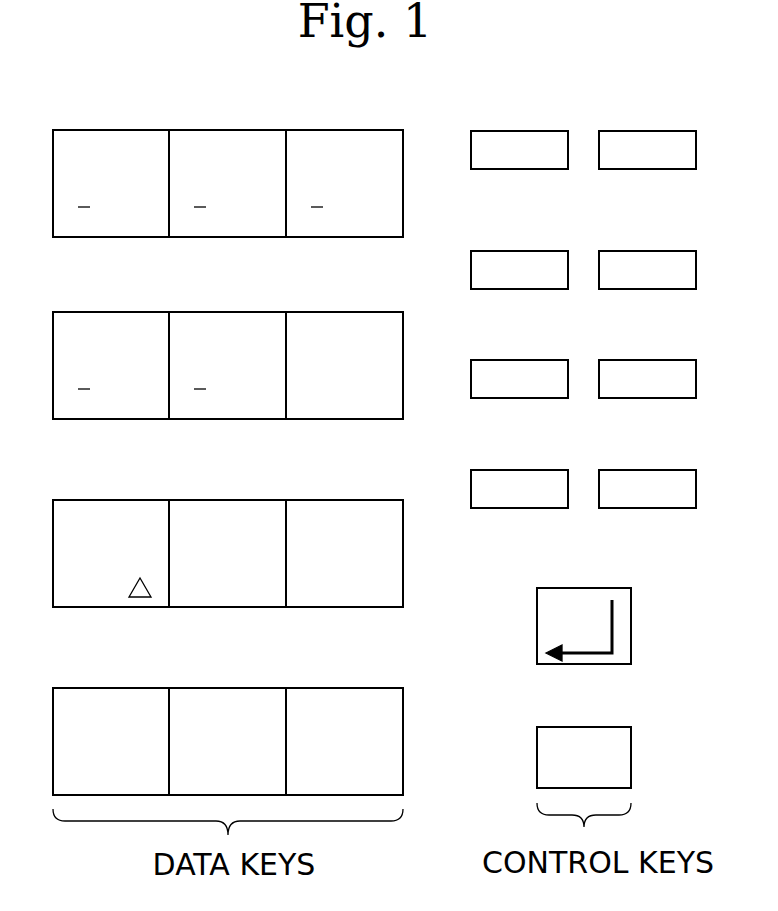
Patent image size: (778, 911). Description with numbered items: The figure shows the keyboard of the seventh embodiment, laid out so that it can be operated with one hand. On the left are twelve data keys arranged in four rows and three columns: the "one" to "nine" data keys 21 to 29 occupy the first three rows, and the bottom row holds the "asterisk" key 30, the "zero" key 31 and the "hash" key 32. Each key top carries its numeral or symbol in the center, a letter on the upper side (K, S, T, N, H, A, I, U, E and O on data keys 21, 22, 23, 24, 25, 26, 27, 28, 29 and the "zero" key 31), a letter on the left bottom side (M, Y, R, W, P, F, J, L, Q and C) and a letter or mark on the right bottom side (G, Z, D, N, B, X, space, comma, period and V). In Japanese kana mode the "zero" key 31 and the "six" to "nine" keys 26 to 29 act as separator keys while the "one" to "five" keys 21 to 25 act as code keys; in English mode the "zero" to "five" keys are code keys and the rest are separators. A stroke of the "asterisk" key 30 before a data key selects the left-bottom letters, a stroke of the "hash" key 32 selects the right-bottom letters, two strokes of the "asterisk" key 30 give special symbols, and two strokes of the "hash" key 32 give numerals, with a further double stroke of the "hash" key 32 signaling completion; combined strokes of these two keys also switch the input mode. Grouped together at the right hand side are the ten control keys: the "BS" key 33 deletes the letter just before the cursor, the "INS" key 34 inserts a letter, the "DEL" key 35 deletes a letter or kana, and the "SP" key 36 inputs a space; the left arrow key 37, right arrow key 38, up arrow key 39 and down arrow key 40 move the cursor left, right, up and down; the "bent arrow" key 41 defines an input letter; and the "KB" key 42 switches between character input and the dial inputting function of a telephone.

The data key 21 is at (83, 129).
The data key 22 is at (199, 129).
The data key 23 is at (316, 129).
The data key 24 is at (83, 311).
The data key 25 is at (199, 311).
The data key 26 is at (316, 311).
The data key 27 is at (83, 499).
The data key 28 is at (199, 499).
The data key 29 is at (316, 499).
The "*" key 30 is at (83, 687).
The "0" key 31 is at (199, 687).
The "#" key 32 is at (316, 687).
The "BS" key 33 is at (492, 130).
The "INS" key 34 is at (492, 250).
The "DEL" key 35 is at (492, 359).
The "SP" key 36 is at (492, 469).
The "←" key 37 is at (620, 130).
The "→" key 38 is at (620, 250).
The "↑" key 39 is at (620, 359).
The "↓" key 40 is at (620, 469).
The "bent arrow" key 41 is at (550, 587).
The "KB" key 42 is at (550, 726).